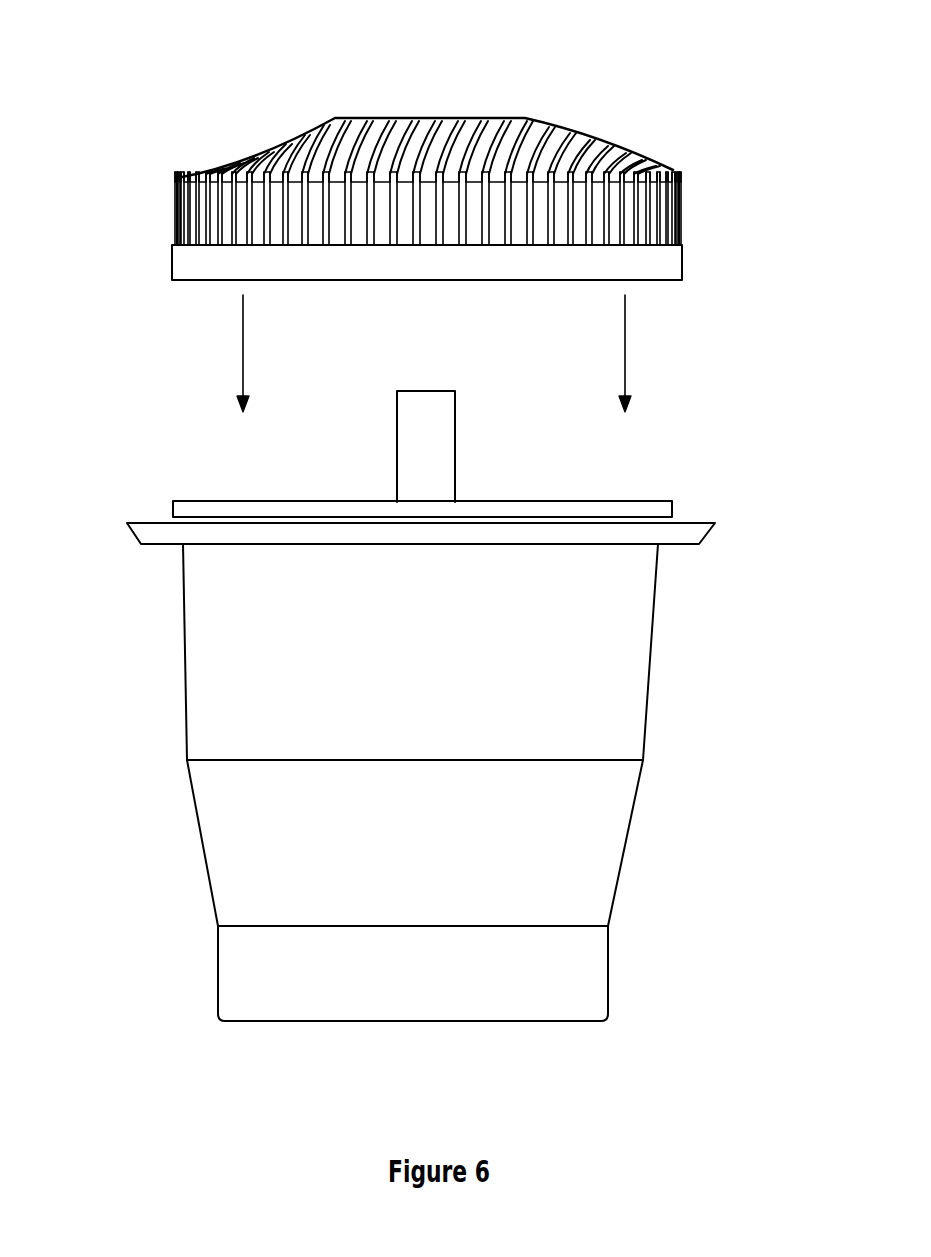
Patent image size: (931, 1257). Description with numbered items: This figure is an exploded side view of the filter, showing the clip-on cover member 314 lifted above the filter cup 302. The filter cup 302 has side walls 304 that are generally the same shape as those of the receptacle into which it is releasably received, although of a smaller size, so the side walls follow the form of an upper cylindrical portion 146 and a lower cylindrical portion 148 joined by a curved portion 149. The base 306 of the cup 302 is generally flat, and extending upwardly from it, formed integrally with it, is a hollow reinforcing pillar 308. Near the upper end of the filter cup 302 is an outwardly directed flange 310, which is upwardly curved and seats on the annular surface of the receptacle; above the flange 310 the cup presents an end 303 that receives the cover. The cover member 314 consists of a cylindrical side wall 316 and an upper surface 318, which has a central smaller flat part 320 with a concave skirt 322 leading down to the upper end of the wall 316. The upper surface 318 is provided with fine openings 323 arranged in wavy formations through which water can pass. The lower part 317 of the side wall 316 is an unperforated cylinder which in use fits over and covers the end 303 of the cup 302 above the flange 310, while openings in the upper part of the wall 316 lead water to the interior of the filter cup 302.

The upper cylindrical portion 146 is at (665, 618).
The lower cylindrical portion 148 is at (450, 1022).
The curved portion 149 is at (637, 848).
The filter cup 302 is at (439, 831).
The end of the cup 303 is at (673, 512).
The side walls 304 is at (424, 843).
The base 306 is at (283, 1022).
The hollow reinforcing pillar 308 is at (457, 445).
The outwardly directed flange 310 is at (163, 535).
The cover member 314 is at (450, 145).
The cylindrical side wall 316 is at (280, 220).
The lower part of the side wall 317 is at (672, 265).
The upper surface 318 is at (603, 161).
The central flat part 320 is at (410, 117).
The concave skirt 322 is at (280, 150).
The fine openings 323 is at (500, 117).